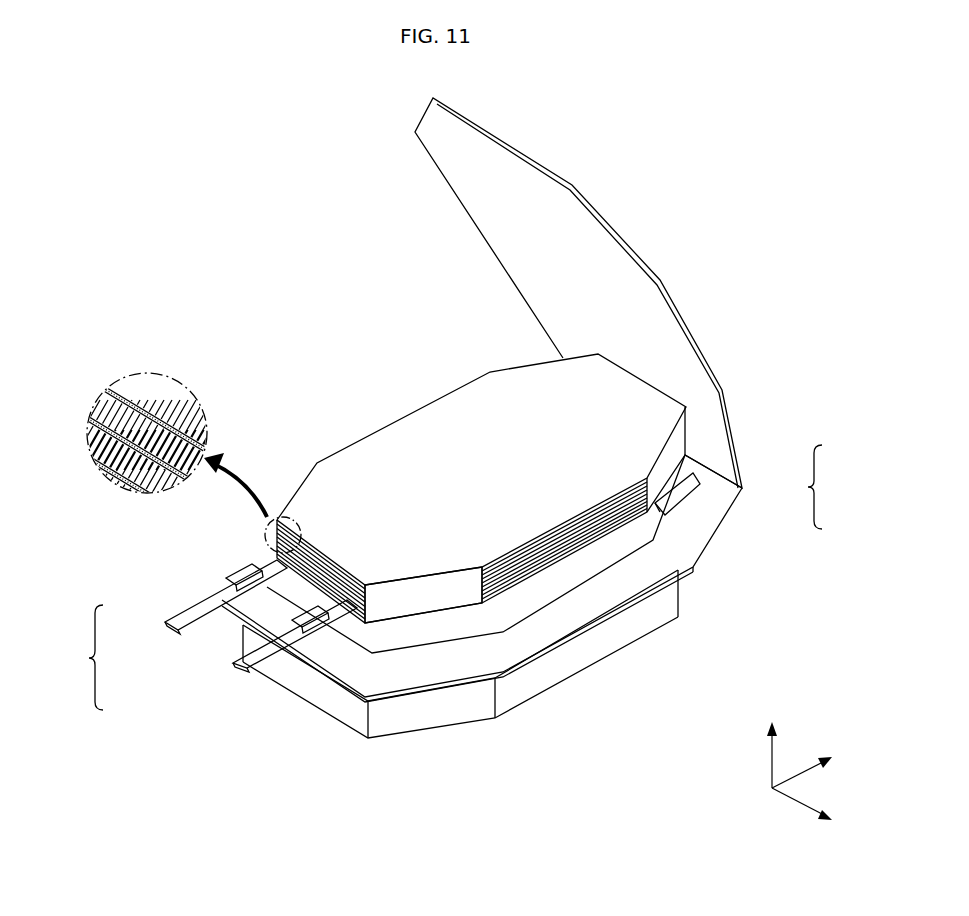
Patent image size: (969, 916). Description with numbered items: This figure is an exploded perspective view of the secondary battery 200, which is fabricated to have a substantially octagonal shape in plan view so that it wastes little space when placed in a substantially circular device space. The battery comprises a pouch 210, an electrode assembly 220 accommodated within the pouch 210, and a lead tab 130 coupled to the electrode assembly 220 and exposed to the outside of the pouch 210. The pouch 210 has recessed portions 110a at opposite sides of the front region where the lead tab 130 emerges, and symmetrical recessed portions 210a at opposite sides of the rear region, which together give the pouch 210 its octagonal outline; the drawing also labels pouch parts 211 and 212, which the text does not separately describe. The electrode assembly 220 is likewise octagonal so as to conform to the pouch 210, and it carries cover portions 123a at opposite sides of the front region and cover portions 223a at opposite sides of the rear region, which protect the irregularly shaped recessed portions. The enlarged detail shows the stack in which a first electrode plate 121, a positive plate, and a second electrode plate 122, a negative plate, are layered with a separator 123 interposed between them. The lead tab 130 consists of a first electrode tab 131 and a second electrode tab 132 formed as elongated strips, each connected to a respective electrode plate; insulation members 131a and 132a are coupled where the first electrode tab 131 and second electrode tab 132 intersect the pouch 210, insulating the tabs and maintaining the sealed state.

The secondary battery 200 is at (780, 134).
The recessed portions 110a is at (419, 116).
The pouch 210 is at (549, 558).
The recessed portions 210a is at (732, 417).
The lower case 211 is at (727, 518).
The upper case 212 is at (742, 453).
The cover portions 223a is at (662, 470).
The electrode assembly 220 is at (475, 553).
The cover portions 123a is at (453, 593).
The lead tab 130 is at (206, 640).
The first electrode tab 131 is at (175, 616).
The second electrode tab 132 is at (240, 665).
The insulation member 131a is at (228, 580).
The insulation member 132a is at (325, 635).
The first electrode plate 121 is at (88, 417).
The second electrode plate 122 is at (98, 393).
The separator 123 is at (205, 448).